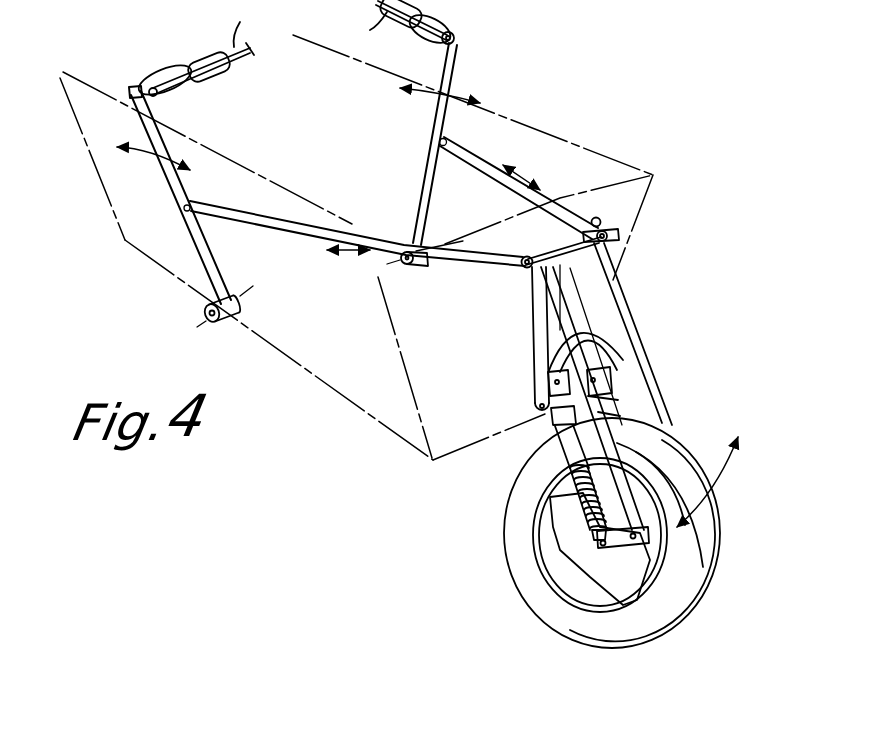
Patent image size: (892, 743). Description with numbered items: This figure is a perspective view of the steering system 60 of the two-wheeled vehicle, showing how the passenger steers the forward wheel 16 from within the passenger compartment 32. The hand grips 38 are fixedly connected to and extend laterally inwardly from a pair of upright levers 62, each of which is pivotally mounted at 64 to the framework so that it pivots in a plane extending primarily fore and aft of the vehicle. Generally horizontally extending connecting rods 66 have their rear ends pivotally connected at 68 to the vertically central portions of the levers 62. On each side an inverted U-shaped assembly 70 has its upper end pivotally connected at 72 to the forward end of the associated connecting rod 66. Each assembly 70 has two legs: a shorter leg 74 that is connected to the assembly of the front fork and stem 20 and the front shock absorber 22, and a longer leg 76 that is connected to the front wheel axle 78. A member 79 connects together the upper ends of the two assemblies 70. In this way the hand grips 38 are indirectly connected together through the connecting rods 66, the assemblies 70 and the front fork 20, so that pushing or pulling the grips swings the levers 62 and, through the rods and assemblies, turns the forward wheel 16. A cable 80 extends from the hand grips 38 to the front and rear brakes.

The forward wheel 16 is at (710, 547).
The front fork and stem 20 is at (608, 369).
The front shock absorber 22 is at (560, 458).
The passenger compartment 32 is at (387, 430).
The hand grips 38 is at (173, 65).
The steering system 60 is at (620, 167).
The upright levers 62 is at (157, 127).
The pivot mounting 64 is at (232, 322).
The connecting rods 66 is at (267, 230).
The pivotal connection 68 is at (182, 200).
The inverted U-shaped assembly 70 is at (600, 277).
The pivotal connection 72 is at (527, 257).
The shorter leg 74 is at (600, 323).
The longer leg 76 is at (657, 407).
The front wheel axle 78 is at (590, 580).
The connecting member 79 is at (600, 217).
The cable 80 is at (372, 20).